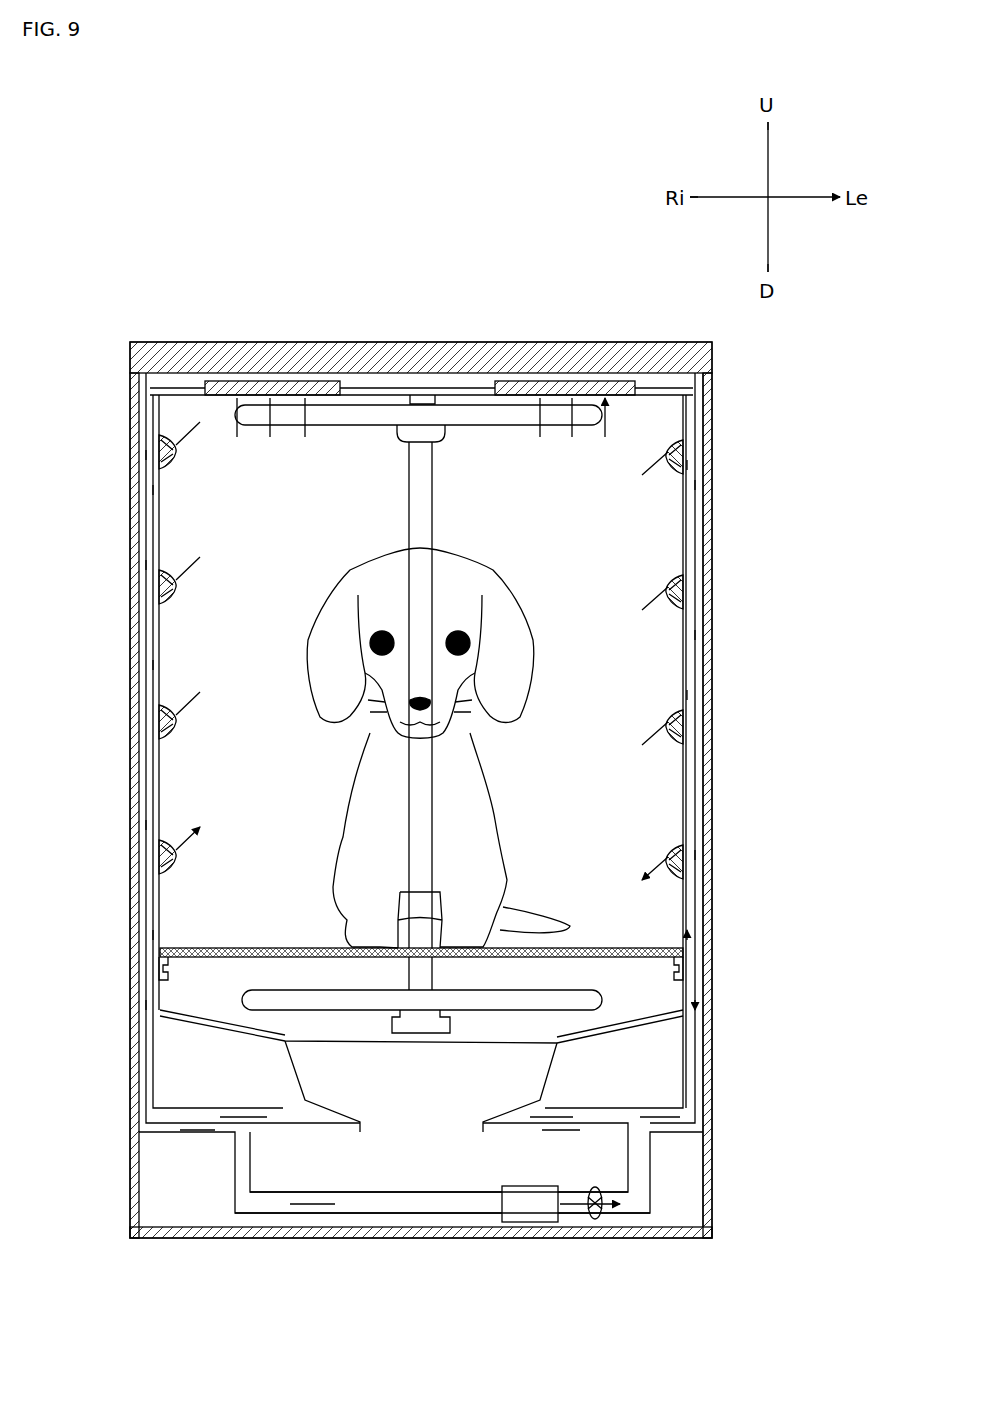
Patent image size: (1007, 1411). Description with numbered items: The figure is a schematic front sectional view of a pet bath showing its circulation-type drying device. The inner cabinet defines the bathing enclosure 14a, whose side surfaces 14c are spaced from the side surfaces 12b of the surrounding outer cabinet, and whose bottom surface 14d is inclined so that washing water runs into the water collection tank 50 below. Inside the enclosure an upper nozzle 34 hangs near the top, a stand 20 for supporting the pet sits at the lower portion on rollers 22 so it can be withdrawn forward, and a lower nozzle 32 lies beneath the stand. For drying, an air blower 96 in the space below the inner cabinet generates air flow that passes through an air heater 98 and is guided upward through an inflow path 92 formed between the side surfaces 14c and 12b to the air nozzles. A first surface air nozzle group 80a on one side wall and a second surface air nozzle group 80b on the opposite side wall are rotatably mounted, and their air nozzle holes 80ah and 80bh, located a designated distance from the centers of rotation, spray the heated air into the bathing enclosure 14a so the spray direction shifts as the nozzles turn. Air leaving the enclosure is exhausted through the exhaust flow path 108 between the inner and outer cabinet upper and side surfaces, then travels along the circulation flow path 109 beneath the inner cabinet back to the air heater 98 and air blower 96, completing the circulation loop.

The side surface of outer cabinet 12b is at (707, 673).
The exhaust flow path 108 is at (702, 783).
The inflow path 92 is at (695, 815).
The bathing enclosure 14a is at (607, 560).
The side surface of inner cabinet 14c is at (693, 632).
The bottom surface of inner cabinet 14d is at (640, 1012).
The upper nozzle 34 is at (470, 410).
The stand 20 is at (640, 945).
The rollers 22 is at (685, 962).
The lower nozzle 32 is at (245, 1002).
The water collection tank 50 is at (535, 1072).
The circulation flow path 109 is at (375, 1215).
The air heater 98 is at (528, 1222).
The air blower 96 is at (598, 1225).
The first surface air nozzle group 80a is at (166, 468).
The air nozzle holes 80ah is at (172, 452).
The second surface air nozzle group 80b is at (674, 470).
The air nozzle holes 80bh is at (670, 457).